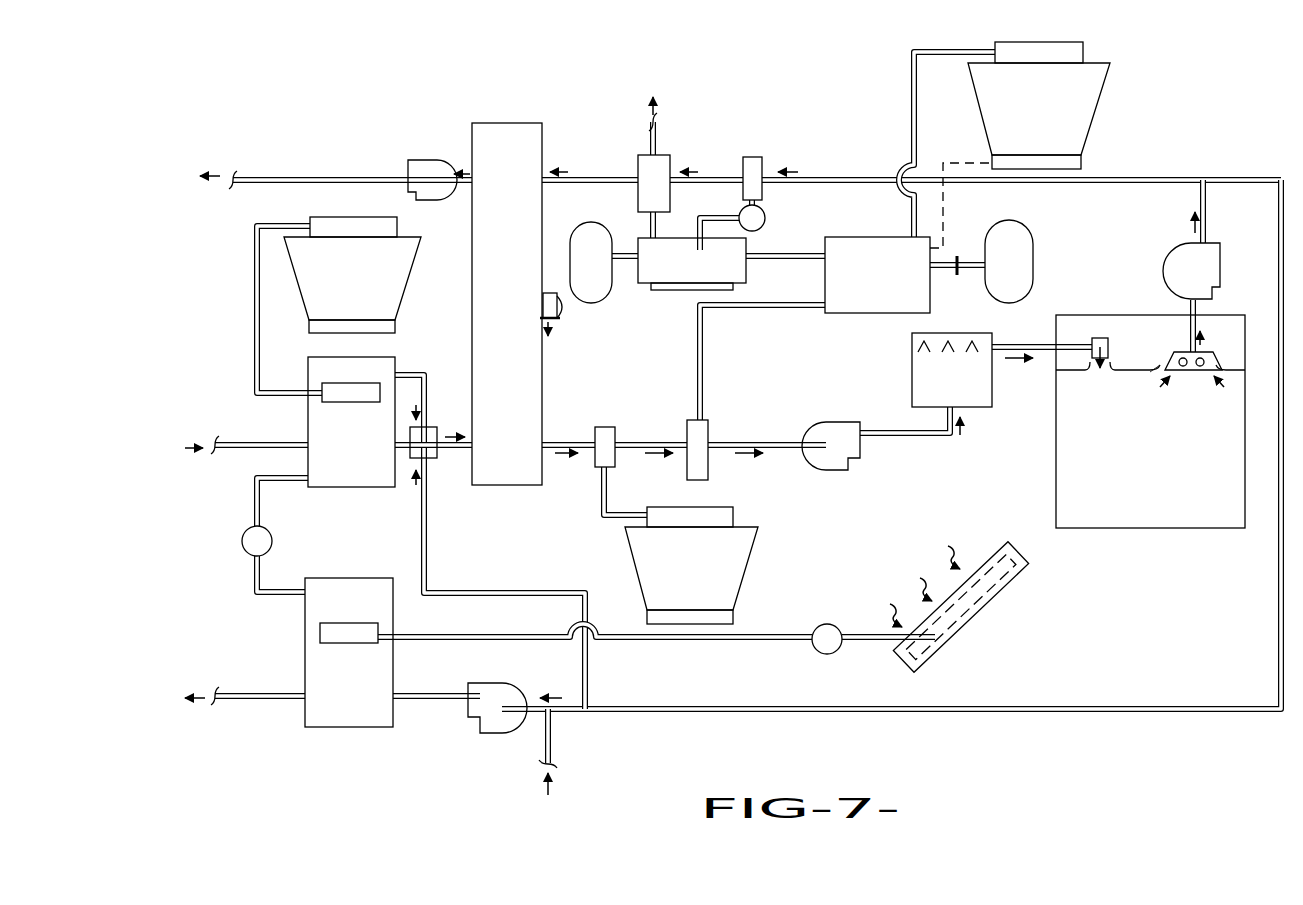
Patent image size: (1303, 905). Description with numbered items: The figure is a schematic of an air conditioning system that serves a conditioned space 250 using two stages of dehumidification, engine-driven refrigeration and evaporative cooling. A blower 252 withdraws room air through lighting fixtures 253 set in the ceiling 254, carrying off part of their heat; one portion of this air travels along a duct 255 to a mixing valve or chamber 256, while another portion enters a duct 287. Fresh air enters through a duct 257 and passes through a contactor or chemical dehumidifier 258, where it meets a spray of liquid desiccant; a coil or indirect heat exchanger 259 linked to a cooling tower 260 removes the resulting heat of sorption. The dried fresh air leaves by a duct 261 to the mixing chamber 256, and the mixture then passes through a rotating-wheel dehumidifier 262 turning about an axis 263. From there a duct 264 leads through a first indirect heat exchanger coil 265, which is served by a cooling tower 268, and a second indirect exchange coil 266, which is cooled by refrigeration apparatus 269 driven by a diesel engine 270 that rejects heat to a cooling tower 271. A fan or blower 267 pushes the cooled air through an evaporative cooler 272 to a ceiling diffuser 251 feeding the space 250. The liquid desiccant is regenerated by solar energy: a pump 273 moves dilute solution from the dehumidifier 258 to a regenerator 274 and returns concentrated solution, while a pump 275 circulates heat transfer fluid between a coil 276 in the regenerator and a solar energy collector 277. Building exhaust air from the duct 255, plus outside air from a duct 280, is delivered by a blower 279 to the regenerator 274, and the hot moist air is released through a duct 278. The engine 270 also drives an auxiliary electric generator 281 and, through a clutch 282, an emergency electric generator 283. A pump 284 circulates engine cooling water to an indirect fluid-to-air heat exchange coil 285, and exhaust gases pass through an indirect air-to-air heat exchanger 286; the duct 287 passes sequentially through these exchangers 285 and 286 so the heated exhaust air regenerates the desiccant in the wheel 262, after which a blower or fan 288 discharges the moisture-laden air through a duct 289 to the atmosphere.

The space 250 is at (1098, 530).
The ceiling diffuser 251 is at (1088, 372).
The blower 252 is at (1216, 282).
The lighting fixtures 253 is at (1181, 376).
The ceiling 254 is at (1163, 360).
The duct 255 is at (1275, 597).
The mixing valve or chamber 256 is at (440, 459).
The duct 257 is at (257, 420).
The contactor or chemical dehumidifier 258 is at (328, 489).
The coil or indirect heat exchanger 259 is at (327, 407).
The cooling tower 260 is at (407, 291).
The duct 261 is at (449, 363).
The dehumidifier 262 is at (540, 373).
The axis 263 is at (561, 330).
The duct 264 is at (590, 418).
The first indirect heat exchanger coil 265 is at (610, 427).
The second indirect exchange coil 266 is at (709, 432).
The fan or blower 267 is at (845, 403).
The cooling tower 268 is at (748, 563).
The refrigeration apparatus 269 is at (876, 316).
The diesel engine 270 is at (690, 293).
The cooling tower 271 is at (1089, 128).
The evaporative cooler 272 is at (972, 415).
The pump 273 is at (272, 541).
The regenerator 274 is at (322, 730).
The pump 275 is at (827, 624).
The coil 276 is at (330, 652).
The solar energy collector 277 is at (970, 620).
The duct 278 is at (268, 678).
The blower 279 is at (488, 683).
The duct 280 is at (542, 750).
The auxiliary electric generator 281 is at (606, 222).
The clutch 282 is at (957, 277).
The emergency electric generator 283 is at (1035, 270).
The pump 284 is at (766, 216).
The indirect fluid-to-air heat exchange coil 285 is at (757, 158).
The indirect air-to-air heat exchanger 286 is at (664, 156).
The duct 287 is at (1150, 181).
The blower or fan 288 is at (433, 160).
The duct 289 is at (306, 179).